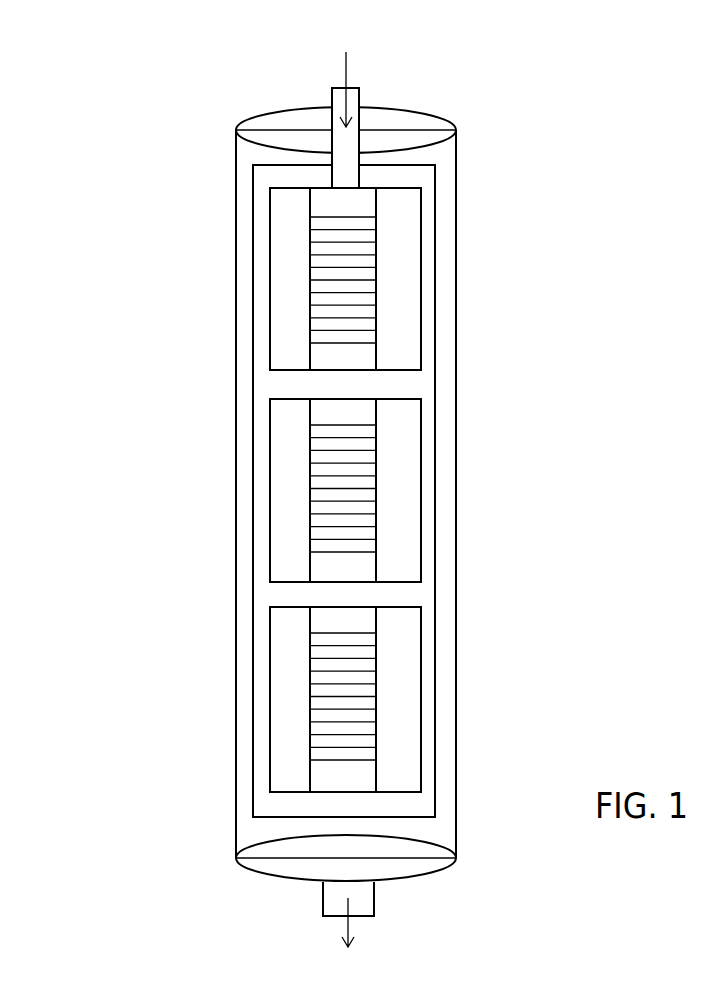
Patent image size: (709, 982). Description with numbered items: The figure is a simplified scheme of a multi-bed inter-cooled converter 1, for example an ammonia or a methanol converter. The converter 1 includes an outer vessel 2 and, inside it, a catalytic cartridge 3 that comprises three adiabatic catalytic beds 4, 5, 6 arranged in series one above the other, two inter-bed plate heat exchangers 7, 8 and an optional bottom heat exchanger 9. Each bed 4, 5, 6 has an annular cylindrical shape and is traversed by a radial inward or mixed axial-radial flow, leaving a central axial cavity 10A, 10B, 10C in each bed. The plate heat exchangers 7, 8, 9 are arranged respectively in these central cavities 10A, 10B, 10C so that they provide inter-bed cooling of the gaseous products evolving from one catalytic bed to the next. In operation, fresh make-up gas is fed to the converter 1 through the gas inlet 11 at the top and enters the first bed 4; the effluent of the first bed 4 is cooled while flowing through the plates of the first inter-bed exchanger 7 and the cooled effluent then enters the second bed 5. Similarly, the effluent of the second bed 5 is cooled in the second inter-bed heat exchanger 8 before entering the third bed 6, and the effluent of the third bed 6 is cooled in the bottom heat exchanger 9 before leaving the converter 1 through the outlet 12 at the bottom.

The multi-bed converter 1 is at (142, 214).
The vessel 2 is at (456, 294).
The catalytic cartridge 3 is at (434, 467).
The first catalytic bed 4 is at (358, 275).
The second catalytic bed 5 is at (355, 485).
The third catalytic bed 6 is at (359, 692).
The first inter-bed plate heat exchanger 7 is at (315, 313).
The second inter-bed plate heat exchanger 8 is at (315, 522).
The bottom heat exchanger 9 is at (318, 728).
The central axial cavity of the first bed 10A is at (365, 213).
The central axial cavity of the second bed 10B is at (364, 418).
The central axial cavity of the third bed 10C is at (364, 627).
The gas inlet 11 is at (359, 98).
The outlet 12 is at (374, 897).